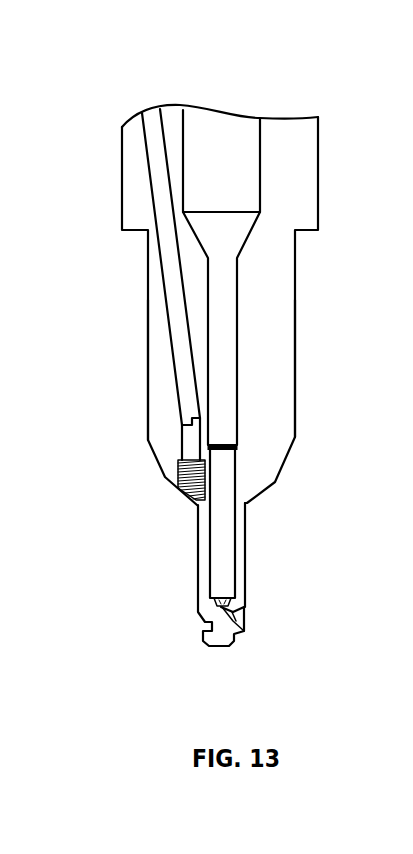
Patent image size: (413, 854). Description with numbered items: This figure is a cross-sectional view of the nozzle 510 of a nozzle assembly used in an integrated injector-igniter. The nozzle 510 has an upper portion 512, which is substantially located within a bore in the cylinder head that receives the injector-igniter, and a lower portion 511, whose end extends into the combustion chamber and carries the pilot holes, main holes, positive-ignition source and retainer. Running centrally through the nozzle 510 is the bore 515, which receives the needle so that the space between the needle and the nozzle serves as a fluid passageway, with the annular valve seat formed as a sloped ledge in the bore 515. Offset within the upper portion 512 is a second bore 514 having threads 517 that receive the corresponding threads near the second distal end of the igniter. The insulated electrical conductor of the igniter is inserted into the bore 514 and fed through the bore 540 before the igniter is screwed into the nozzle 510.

The nozzle 510 is at (295, 353).
The lower portion 511 is at (245, 548).
The upper portion 512 is at (295, 302).
The bore 514 is at (196, 500).
The bore 515 is at (258, 153).
The threads 517 is at (178, 484).
The bore 540 is at (152, 130).